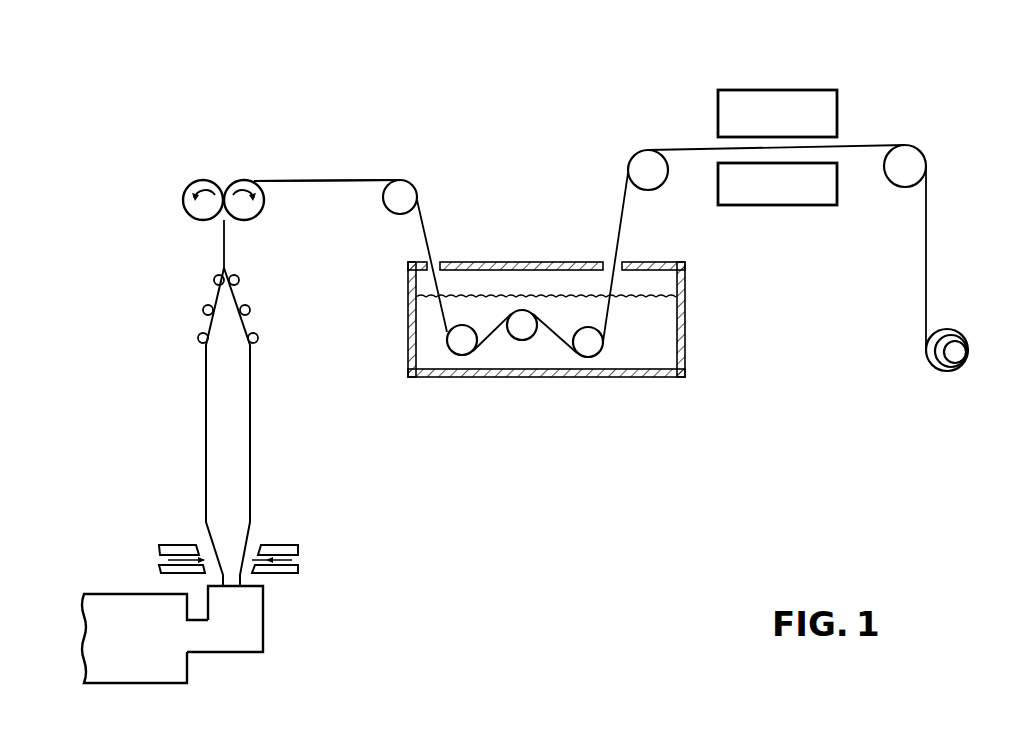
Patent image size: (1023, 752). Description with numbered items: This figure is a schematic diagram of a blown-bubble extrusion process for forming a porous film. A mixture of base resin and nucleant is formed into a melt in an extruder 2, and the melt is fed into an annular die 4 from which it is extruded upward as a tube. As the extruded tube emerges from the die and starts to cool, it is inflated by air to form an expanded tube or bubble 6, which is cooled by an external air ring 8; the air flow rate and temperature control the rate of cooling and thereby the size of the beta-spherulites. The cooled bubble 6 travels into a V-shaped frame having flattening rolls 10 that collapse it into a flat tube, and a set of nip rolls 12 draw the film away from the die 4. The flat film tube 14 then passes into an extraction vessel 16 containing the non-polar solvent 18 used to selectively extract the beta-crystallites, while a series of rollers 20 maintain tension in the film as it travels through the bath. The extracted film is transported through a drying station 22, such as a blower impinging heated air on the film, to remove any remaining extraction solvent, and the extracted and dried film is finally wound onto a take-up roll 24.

The extruder 2 is at (134, 644).
The annular die 4 is at (239, 624).
The bubble 6 is at (233, 436).
The external air ring 8 is at (283, 545).
The flattening rolls 10 is at (203, 308).
The nip rolls 12 is at (191, 184).
The flat film tube 14 is at (318, 179).
The extraction vessel 16 is at (686, 346).
The non-polar solvent 18 is at (654, 334).
The rollers 20 is at (417, 187).
The drying station 22 is at (783, 97).
The take-up roll 24 is at (962, 333).